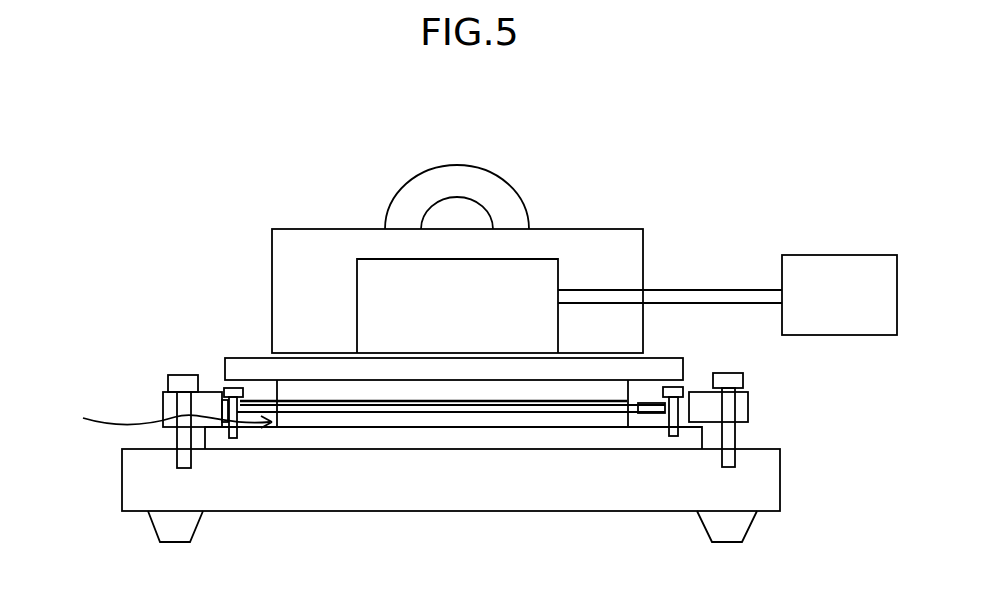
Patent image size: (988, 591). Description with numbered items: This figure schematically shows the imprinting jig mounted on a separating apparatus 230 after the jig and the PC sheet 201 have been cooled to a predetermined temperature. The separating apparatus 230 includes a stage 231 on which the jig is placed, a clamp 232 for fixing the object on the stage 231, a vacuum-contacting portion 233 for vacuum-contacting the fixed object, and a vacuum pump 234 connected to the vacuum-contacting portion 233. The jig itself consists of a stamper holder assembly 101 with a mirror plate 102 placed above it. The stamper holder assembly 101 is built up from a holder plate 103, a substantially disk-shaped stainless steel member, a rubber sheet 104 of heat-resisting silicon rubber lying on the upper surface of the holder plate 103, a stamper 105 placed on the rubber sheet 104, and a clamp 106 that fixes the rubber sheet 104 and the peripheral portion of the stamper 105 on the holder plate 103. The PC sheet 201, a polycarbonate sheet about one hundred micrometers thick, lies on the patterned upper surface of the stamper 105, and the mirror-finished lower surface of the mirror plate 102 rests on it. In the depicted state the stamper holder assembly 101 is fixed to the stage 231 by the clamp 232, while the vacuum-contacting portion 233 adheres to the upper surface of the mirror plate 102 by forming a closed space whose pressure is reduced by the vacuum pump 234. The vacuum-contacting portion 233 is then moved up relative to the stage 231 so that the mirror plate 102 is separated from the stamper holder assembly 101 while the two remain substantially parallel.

The stamper holder assembly 101 is at (152, 422).
The mirror plate 102 is at (248, 368).
The holder plate 103 is at (303, 440).
The rubber sheet 104 is at (432, 420).
The stamper 105 is at (537, 410).
The clamp 106 is at (222, 390).
The PC sheet 201 is at (628, 403).
The separating apparatus 230 is at (572, 177).
The stage 231 is at (765, 483).
The clamp 232 is at (743, 408).
The vacuum-contacting portion 233 is at (623, 263).
The vacuum pump 234 is at (832, 267).